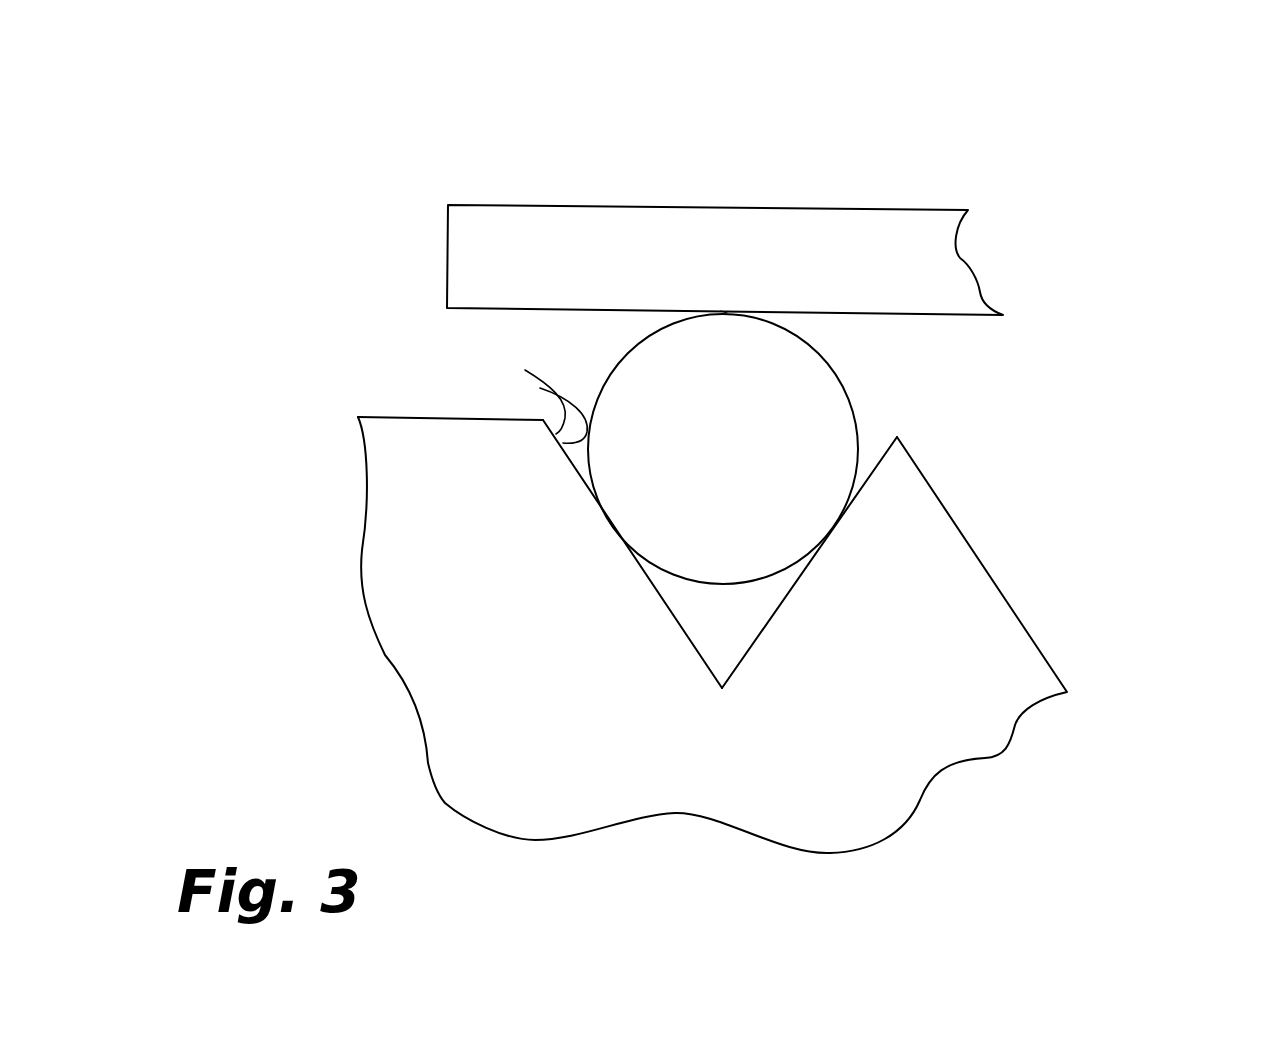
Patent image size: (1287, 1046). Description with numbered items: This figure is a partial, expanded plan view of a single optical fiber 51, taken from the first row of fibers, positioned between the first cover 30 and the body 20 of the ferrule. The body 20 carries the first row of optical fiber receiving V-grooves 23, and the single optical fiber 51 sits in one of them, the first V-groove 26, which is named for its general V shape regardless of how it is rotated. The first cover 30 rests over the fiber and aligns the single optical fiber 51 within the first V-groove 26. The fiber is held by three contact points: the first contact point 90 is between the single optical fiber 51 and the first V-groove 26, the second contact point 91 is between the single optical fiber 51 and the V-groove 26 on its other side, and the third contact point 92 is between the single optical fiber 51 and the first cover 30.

The body 20 is at (445, 803).
The first row of optical fiber receiving V-grooves 23 is at (540, 388).
The first V-groove 26 is at (525, 370).
The first cover 30 is at (482, 198).
The single optical fiber 51 is at (843, 387).
The first contact point 90 is at (613, 525).
The second contact point 91 is at (832, 532).
The third contact point 92 is at (725, 312).